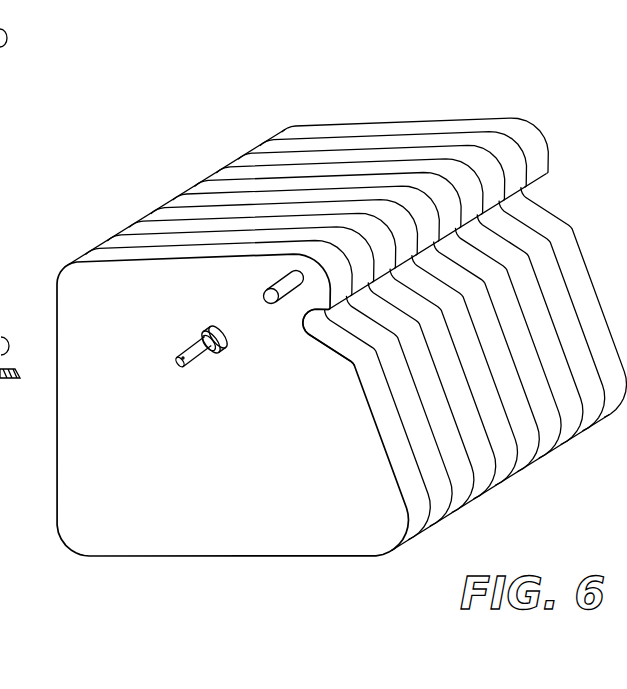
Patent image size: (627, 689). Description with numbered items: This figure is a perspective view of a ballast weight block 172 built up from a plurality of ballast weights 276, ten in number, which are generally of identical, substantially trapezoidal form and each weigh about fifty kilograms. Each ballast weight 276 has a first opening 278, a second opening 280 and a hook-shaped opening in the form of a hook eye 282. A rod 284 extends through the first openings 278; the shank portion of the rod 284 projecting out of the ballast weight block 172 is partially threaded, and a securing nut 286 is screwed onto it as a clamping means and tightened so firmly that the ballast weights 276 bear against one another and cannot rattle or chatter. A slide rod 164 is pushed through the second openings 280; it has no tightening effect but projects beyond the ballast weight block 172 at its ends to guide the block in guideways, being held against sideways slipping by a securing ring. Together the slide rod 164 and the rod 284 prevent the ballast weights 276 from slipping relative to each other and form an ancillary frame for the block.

The ballast weight block 172 is at (342, 289).
The ballast weight 276 is at (208, 479).
The hook eye 282 is at (331, 344).
The second opening 280 is at (288, 270).
The slide rod 164 is at (273, 304).
The rod 284 is at (174, 347).
The securing nut 286 is at (215, 358).
The first opening 278 is at (229, 330).